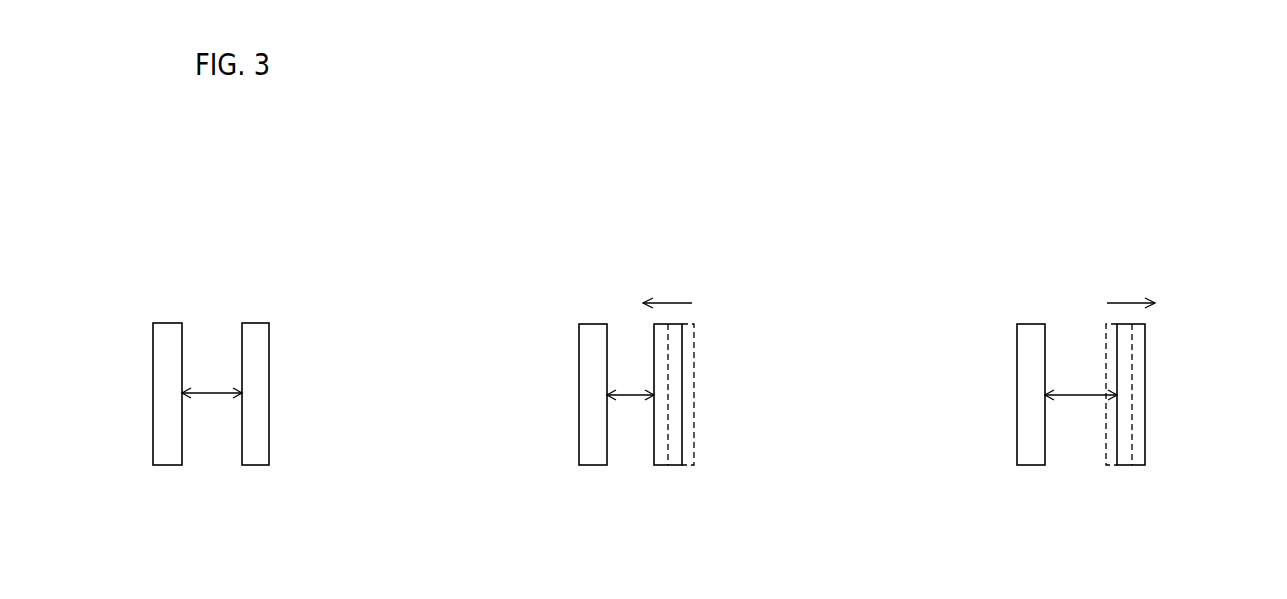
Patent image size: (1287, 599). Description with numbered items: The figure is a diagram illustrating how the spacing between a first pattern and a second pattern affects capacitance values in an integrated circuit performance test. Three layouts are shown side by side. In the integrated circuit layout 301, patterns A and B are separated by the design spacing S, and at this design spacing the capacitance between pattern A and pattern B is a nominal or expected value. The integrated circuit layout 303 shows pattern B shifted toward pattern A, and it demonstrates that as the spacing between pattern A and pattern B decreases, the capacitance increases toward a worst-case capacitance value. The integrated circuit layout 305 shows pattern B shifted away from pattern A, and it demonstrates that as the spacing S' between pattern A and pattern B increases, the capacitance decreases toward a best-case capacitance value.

The integrated circuit layout 301 is at (282, 378).
The integrated circuit layout 303 is at (713, 365).
The integrated circuit layout 305 is at (1158, 400).